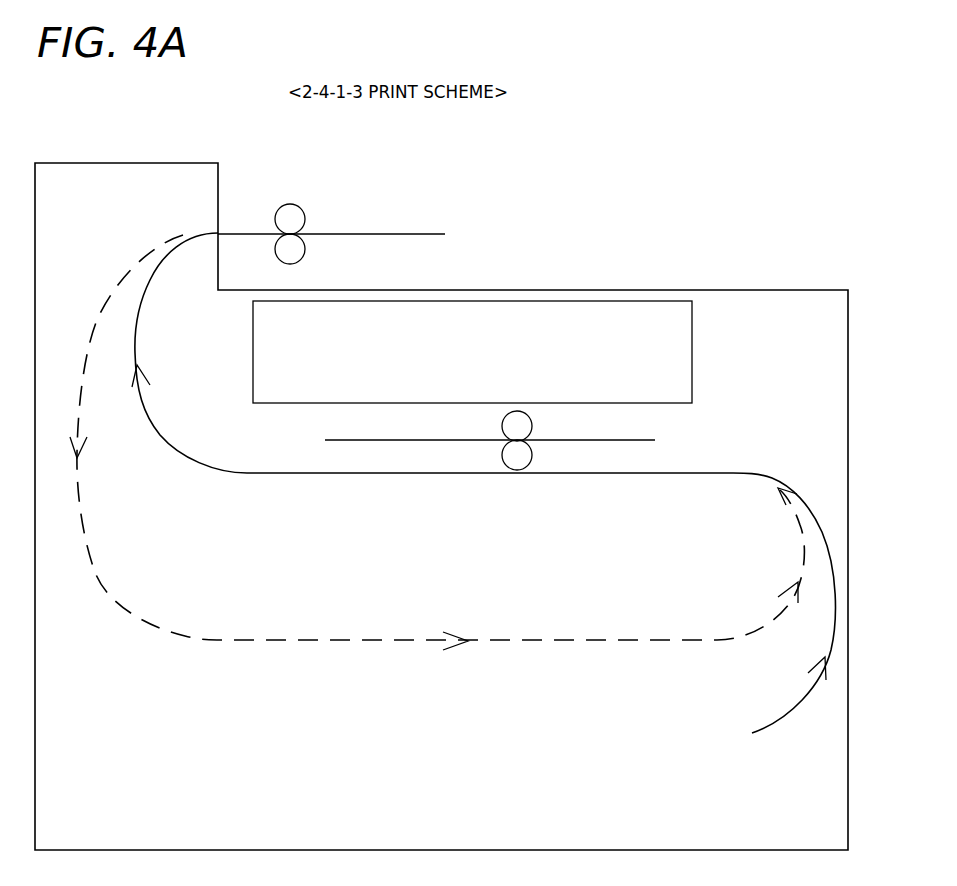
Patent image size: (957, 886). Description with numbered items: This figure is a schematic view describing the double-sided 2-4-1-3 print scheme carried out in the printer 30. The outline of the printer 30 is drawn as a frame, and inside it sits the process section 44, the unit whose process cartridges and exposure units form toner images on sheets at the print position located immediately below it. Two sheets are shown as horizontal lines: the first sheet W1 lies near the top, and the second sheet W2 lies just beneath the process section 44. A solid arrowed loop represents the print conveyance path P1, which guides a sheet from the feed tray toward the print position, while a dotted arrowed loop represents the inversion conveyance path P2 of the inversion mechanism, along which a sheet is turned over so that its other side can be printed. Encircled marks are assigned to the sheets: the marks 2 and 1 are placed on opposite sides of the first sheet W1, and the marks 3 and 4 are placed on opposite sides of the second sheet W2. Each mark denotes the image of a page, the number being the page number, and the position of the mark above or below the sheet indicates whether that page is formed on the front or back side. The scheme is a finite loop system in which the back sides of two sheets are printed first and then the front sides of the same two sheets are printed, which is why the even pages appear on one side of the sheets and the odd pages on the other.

The printer 30 is at (528, 172).
The process section 44 is at (622, 322).
The first sheet W1 is at (333, 233).
The second sheet W2 is at (340, 440).
The print conveyance path P1 is at (817, 523).
The inversion conveyance path P2 is at (88, 555).
The encircled page-number mark 1 is at (290, 249).
The encircled page-number mark 2 is at (290, 219).
The encircled page-number mark 3 is at (517, 426).
The encircled page-number mark 4 is at (517, 455).